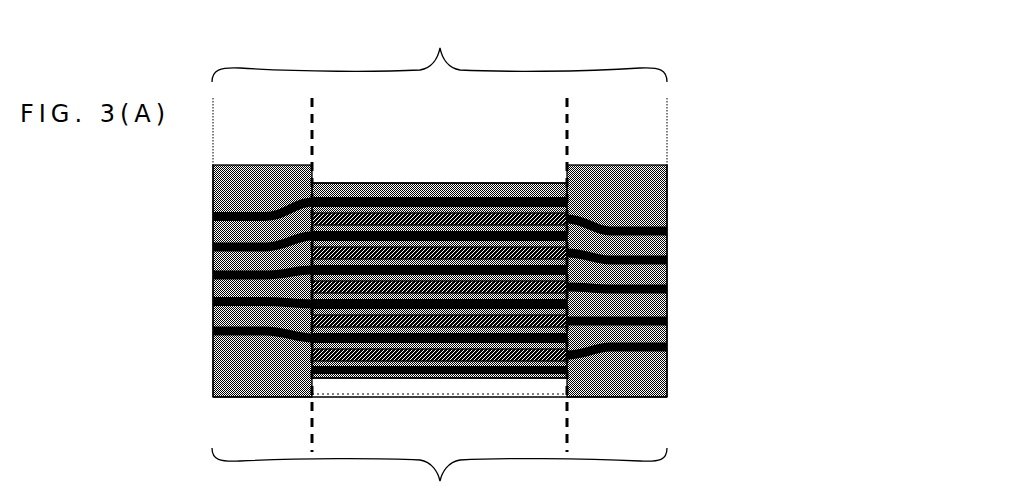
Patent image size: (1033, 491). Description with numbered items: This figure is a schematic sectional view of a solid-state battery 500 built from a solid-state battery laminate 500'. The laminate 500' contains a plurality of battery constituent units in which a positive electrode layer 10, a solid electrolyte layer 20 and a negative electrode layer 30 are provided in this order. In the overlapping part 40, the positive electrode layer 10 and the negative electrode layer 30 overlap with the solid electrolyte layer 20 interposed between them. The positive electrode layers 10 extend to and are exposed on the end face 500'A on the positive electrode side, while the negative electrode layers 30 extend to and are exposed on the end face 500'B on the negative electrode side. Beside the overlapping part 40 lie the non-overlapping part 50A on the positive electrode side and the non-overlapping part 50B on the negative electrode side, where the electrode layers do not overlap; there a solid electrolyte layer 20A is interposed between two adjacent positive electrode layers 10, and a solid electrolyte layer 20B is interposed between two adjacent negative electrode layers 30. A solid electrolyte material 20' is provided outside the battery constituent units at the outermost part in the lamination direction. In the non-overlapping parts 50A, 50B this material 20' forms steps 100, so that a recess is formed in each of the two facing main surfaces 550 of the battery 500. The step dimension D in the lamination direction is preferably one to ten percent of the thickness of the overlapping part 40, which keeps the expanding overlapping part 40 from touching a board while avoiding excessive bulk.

The main surface of solid-state battery 550 is at (439, 255).
The non-overlapping part on negative electrode side 50B is at (311, 126).
The non-overlapping part on positive electrode side 50A is at (666, 126).
The overlapping part 40 is at (566, 151).
The solid-state battery laminate 500' is at (512, 224).
The solid-state battery 500 is at (517, 236).
The end face on negative electrode side 500'B is at (144, 281).
The end face on positive electrode side 500'A is at (757, 281).
The positive electrode layer 10 is at (665, 230).
The solid electrolyte layer 20 is at (524, 280).
The negative electrode layer 30 is at (555, 270).
The solid electrolyte layer between two negative electrode layers 20B is at (227, 316).
The solid electrolyte layer between two positive electrode layers 20A is at (655, 333).
The solid electrolyte material 20' is at (656, 385).
The step 100 is at (318, 388).
The dimension of step D is at (427, 381).